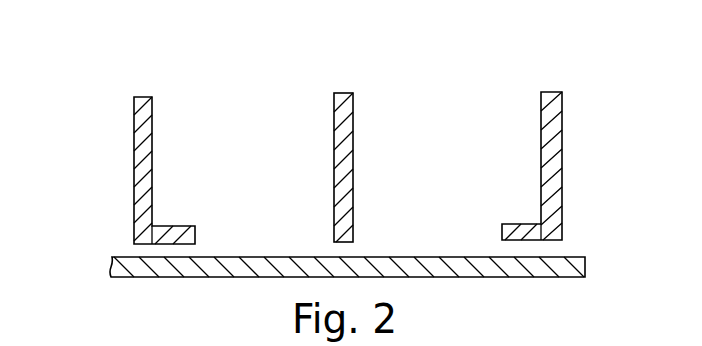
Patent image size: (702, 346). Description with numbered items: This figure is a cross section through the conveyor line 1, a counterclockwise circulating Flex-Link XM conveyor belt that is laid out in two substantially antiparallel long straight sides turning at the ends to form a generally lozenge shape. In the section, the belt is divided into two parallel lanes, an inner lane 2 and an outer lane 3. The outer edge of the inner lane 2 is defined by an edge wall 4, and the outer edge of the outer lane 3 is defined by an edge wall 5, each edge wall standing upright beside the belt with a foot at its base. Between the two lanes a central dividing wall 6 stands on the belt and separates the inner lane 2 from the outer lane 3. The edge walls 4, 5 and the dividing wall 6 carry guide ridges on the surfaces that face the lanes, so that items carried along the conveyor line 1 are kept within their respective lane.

The conveyor line 1 is at (100, 267).
The inner lane 2 is at (235, 78).
The outer lane 3 is at (472, 78).
The edge wall 4 is at (134, 137).
The edge wall 5 is at (563, 120).
The central dividing wall 6 is at (348, 93).